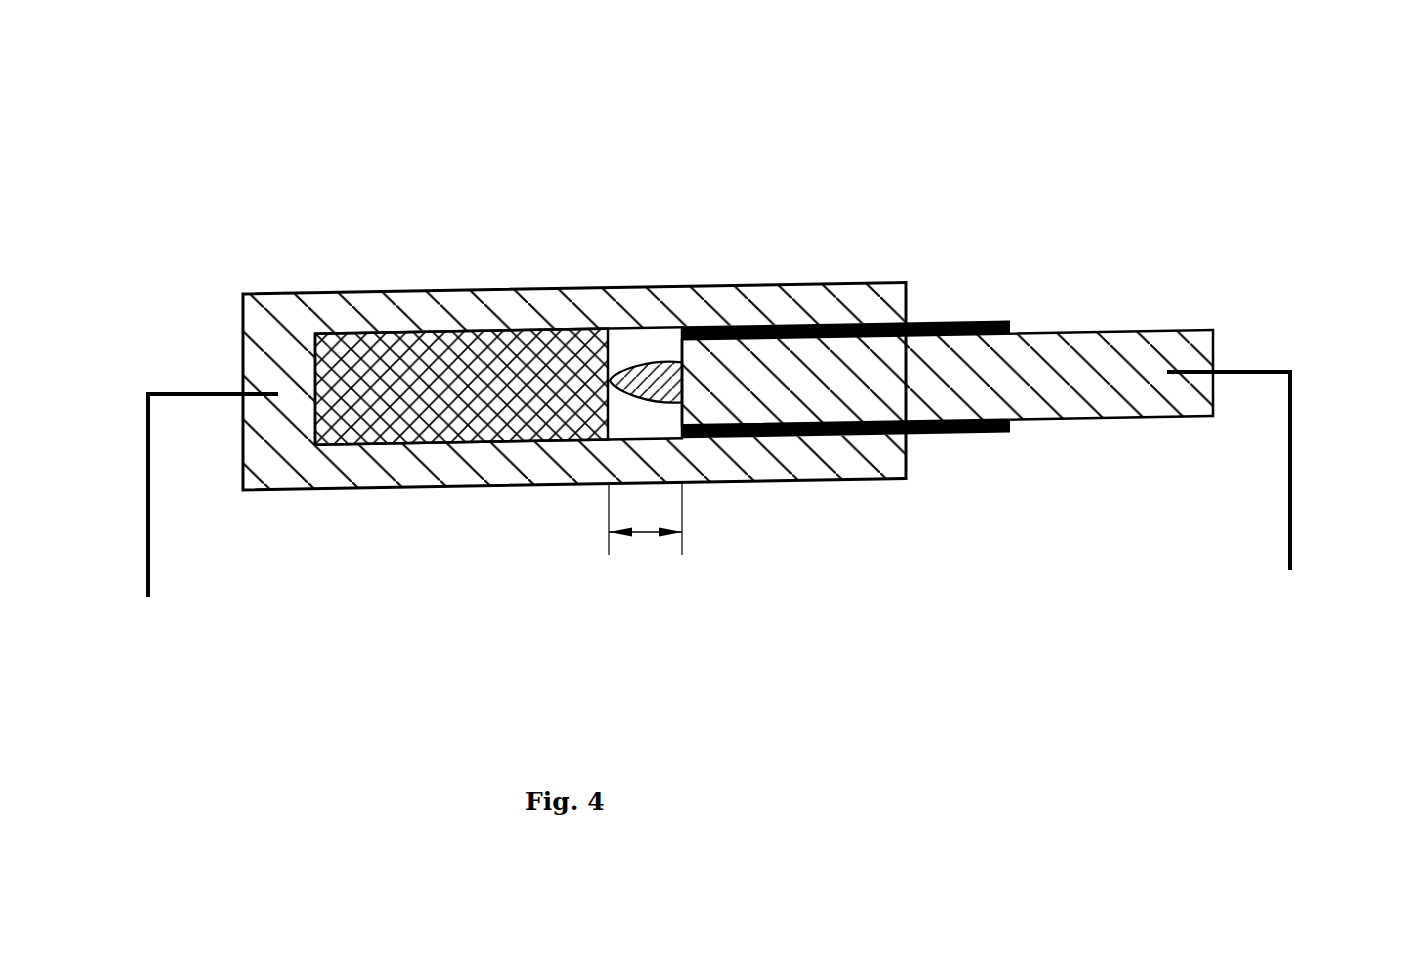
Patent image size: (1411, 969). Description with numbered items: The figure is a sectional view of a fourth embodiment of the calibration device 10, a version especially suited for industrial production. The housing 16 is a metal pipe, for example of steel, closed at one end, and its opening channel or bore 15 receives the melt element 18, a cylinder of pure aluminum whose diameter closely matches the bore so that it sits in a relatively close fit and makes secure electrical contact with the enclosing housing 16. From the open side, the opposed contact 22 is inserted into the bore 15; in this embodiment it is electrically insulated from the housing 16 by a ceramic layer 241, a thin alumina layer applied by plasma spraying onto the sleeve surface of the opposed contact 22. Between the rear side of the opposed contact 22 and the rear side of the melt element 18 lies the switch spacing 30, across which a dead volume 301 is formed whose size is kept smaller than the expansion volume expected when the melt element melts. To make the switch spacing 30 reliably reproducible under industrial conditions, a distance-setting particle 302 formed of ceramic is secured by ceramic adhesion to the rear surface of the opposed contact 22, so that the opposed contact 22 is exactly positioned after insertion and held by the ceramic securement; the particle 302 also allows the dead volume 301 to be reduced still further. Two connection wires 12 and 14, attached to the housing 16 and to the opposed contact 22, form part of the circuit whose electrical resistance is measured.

The calibration device 10 is at (405, 523).
The connection wire 12 is at (147, 493).
The connection wire 14 is at (1290, 517).
The bore 15 is at (822, 322).
The housing 16 is at (470, 313).
The melt element 18 is at (440, 423).
The opposed contact 22 is at (1130, 347).
The ceramic layer 241 is at (990, 437).
The switch spacing 30 is at (653, 533).
The dead volume 301 is at (638, 422).
The distance-setting particle 302 is at (650, 368).